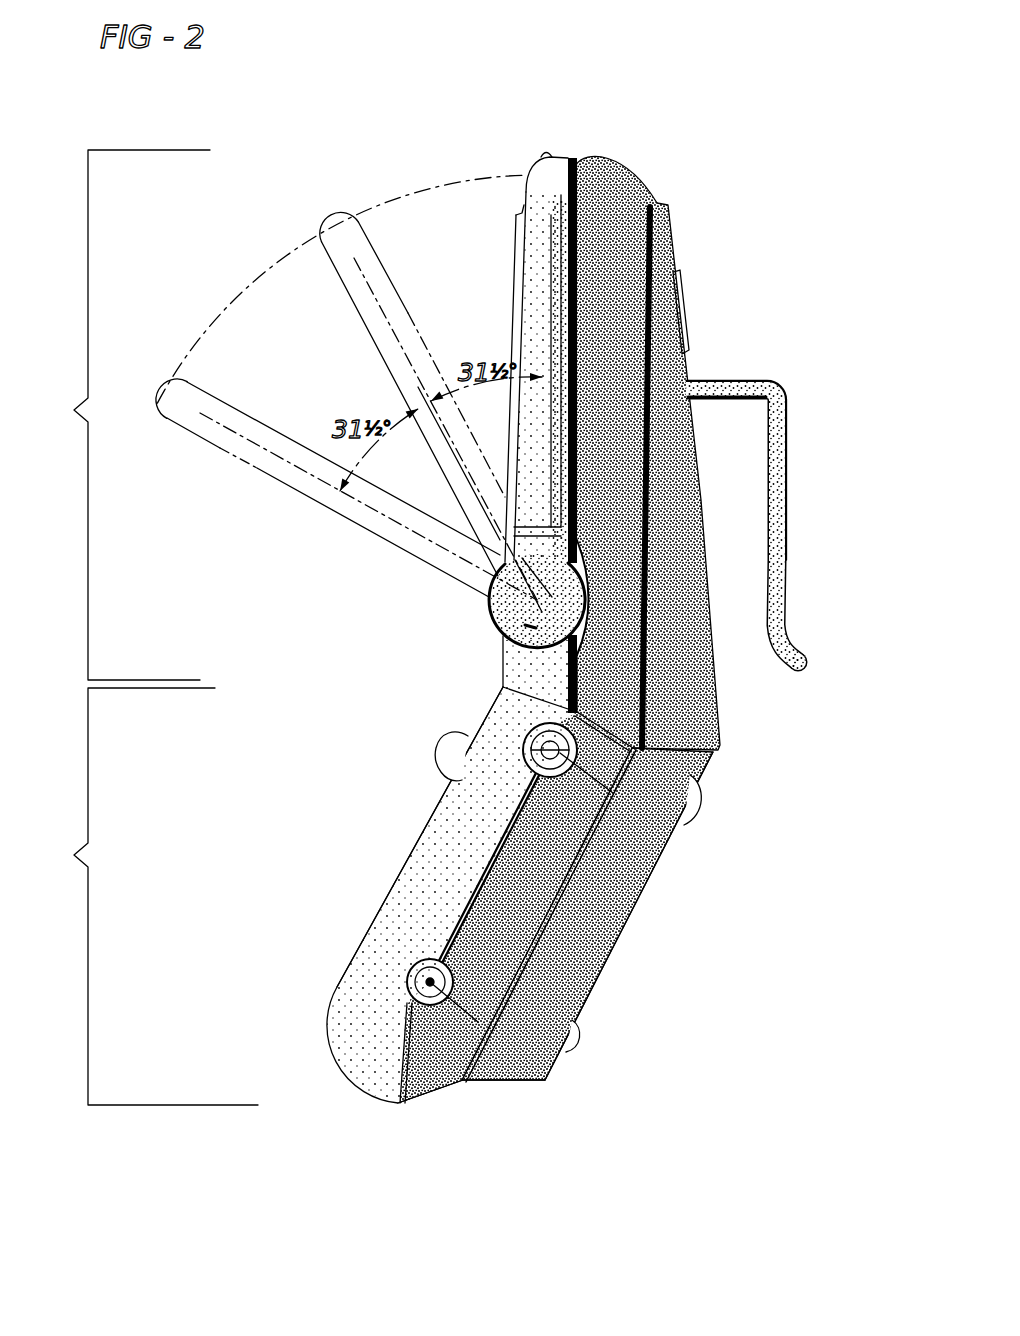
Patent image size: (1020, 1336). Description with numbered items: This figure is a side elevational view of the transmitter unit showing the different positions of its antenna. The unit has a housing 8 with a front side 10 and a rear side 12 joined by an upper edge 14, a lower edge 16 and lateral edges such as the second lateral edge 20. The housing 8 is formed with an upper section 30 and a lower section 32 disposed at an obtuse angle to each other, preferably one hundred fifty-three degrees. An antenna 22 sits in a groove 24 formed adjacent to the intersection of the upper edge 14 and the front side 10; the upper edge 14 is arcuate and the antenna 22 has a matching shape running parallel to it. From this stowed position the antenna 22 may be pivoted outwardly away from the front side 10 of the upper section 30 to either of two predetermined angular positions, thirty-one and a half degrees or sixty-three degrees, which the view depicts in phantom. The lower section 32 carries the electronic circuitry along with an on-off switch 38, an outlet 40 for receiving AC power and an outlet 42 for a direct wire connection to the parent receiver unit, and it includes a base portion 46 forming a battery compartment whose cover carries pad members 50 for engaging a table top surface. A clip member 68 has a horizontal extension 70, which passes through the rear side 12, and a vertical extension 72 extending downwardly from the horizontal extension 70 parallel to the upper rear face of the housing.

The housing 8 is at (356, 1114).
The front side 10 is at (501, 256).
The rear side 12 is at (701, 281).
The upper edge 14 is at (628, 167).
The lower edge 16 is at (398, 1106).
The second lateral edge 20 is at (420, 905).
The antenna 22 is at (530, 162).
The groove 24 is at (587, 157).
The upper section 30 is at (121, 415).
The lower section 32 is at (146, 896).
The on-off switch 38 is at (440, 750).
The outlet 40 is at (546, 1082).
The outlet 42 is at (668, 843).
The base portion 46 is at (578, 958).
The pad members 50 is at (697, 805).
The clip member 68 is at (774, 479).
The horizontal extension 70 is at (723, 380).
The vertical extension 72 is at (783, 470).